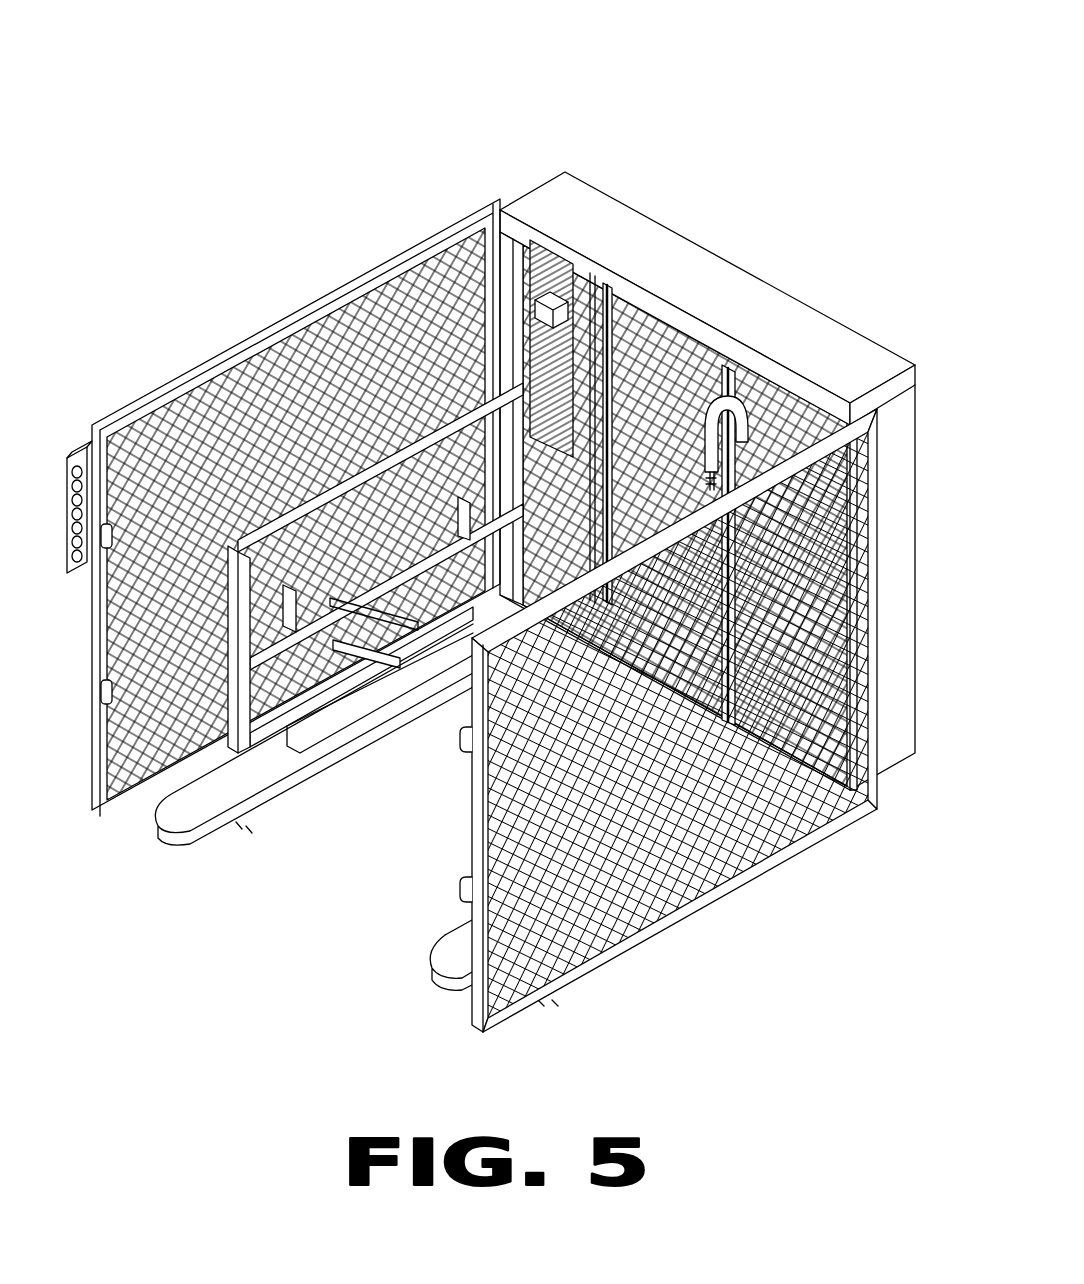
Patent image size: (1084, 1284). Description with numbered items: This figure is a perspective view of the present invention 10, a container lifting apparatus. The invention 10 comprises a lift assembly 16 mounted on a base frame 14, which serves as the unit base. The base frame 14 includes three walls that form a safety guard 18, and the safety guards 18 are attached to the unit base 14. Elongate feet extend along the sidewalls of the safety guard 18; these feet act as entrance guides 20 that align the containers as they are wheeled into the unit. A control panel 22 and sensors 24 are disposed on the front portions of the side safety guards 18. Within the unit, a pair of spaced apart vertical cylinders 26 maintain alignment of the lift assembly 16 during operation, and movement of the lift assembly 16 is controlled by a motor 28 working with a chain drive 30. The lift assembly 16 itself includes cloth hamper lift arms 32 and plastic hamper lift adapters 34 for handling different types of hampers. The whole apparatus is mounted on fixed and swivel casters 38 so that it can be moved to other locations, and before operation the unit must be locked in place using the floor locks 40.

The present invention 10 is at (860, 90).
The base frame 14 is at (763, 252).
The lift assembly 16 is at (325, 492).
The safety guard 18 is at (665, 912).
The entrance guides 20 is at (160, 832).
The control panel 22 is at (78, 452).
The sensors 24 is at (463, 880).
The vertical cylinders 26 is at (712, 385).
The motor 28 is at (578, 445).
The chain drive 30 is at (780, 358).
The cloth hamper lift arms 32 is at (280, 588).
The plastic hamper lift adapters 34 is at (398, 312).
The fixed and swivel casters 38 is at (248, 830).
The floor locks 40 is at (240, 826).